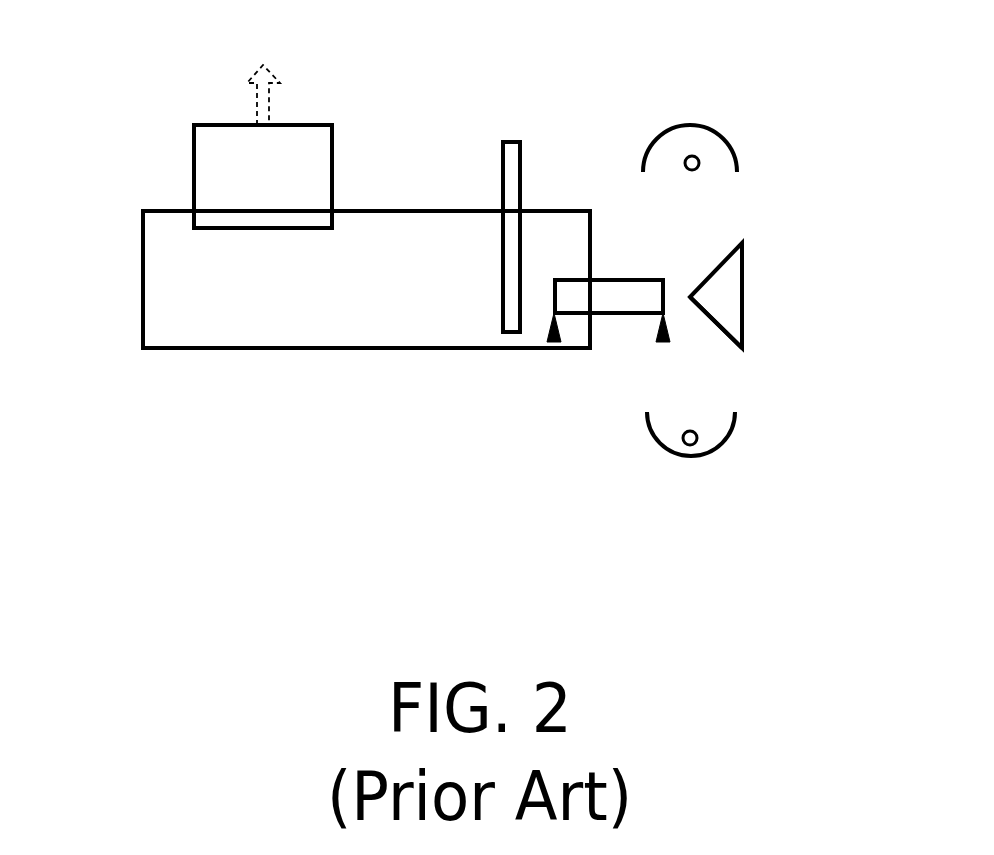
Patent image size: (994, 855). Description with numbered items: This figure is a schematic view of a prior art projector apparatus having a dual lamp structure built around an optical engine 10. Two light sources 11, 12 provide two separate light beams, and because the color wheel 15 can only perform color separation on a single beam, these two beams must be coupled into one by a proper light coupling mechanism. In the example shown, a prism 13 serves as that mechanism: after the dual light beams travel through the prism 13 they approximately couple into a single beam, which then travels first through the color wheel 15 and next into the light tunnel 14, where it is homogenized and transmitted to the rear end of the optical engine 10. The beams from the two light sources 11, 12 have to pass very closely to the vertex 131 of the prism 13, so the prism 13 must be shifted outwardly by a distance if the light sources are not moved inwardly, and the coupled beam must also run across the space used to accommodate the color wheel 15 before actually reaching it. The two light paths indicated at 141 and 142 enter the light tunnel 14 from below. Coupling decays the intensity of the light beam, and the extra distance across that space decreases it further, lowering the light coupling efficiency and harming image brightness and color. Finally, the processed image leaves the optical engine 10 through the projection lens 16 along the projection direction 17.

The optical engine 10 is at (212, 348).
The light source 11 is at (735, 150).
The light source 12 is at (728, 445).
The prism 13 is at (742, 288).
The vertex 131 is at (692, 305).
The light tunnel 14 is at (640, 280).
The first light beam 141 is at (663, 343).
The second light beam 142 is at (554, 343).
The color wheel 15 is at (503, 178).
The projection lens 16 is at (194, 168).
The projection direction 17 is at (257, 110).